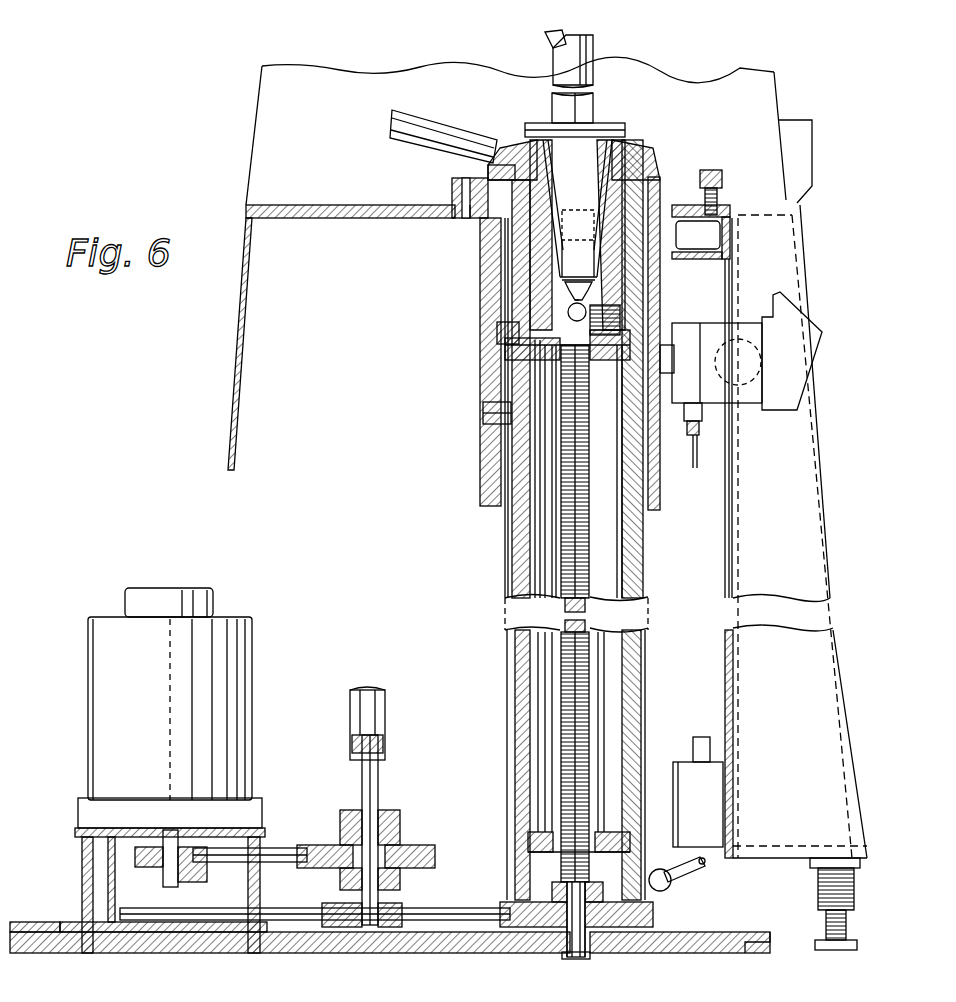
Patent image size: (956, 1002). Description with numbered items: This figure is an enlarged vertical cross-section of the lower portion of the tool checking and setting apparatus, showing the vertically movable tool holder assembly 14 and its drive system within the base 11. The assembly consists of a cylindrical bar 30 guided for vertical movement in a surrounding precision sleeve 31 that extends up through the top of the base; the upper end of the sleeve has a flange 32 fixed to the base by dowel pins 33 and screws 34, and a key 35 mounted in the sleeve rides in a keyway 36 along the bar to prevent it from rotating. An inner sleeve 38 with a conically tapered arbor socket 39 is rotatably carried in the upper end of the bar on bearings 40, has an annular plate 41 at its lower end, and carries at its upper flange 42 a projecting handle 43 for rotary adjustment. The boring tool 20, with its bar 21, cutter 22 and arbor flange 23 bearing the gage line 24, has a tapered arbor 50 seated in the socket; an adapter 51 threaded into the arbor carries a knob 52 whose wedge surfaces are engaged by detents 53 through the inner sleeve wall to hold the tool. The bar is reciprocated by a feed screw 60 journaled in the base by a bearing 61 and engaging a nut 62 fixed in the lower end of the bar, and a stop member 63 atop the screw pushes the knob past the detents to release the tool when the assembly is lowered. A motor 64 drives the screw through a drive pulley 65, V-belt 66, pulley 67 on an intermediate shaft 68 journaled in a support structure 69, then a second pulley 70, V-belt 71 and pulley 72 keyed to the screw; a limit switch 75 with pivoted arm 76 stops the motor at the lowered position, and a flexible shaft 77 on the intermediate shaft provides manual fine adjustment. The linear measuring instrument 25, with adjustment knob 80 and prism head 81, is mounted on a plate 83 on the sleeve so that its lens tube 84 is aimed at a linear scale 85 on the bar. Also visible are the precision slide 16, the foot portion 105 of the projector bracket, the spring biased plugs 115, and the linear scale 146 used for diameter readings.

The base 11 is at (244, 348).
The tool holder assembly 14 is at (503, 93).
The precision slide 16 is at (658, 1001).
The boring tool 20 is at (600, 62).
The bar 21 is at (555, 66).
The cutter 22 is at (545, 36).
The arbor flange 23 is at (602, 120).
The gage line 24 is at (622, 132).
The linear measuring instrument 25 is at (750, 418).
The cylindrical bar 30 is at (508, 578).
The precision sleeve 31 is at (480, 468).
The flange 32 is at (450, 190).
The dowel pins 33 is at (468, 218).
The screws 34 is at (696, 172).
The key 35 is at (482, 412).
The keyway 36 is at (512, 542).
The inner sleeve 38 is at (530, 272).
The arbor socket 39 is at (548, 130).
The bearings 40 is at (487, 172).
The annular plate 41 is at (602, 366).
The flange 42 is at (655, 165).
The handle 43 is at (430, 122).
The tapered arbor 50 is at (577, 208).
The adapter 51 is at (600, 288).
The knob 52 is at (566, 318).
The detents 53 is at (624, 310).
The feed screw 60 is at (562, 606).
The bearing 61 is at (600, 950).
The nut 62 is at (516, 806).
The stop member 63 is at (505, 358).
The motor 64 is at (240, 620).
The drive pulley 65 is at (180, 885).
The V-belt 66 is at (244, 864).
The pulley 67 is at (320, 845).
The intermediate shaft 68 is at (380, 786).
The support structure 69 is at (398, 816).
The second pulley 70 is at (326, 904).
The V-belt 71 is at (464, 908).
The pulley 72 is at (538, 930).
The limit switch 75 is at (690, 765).
The pivoted arm 76 is at (672, 882).
The flexible shaft 77 is at (386, 732).
The adjustment knob 80 is at (740, 352).
The prism head 81 is at (812, 368).
The plate 83 is at (676, 394).
The lens tube 84 is at (668, 358).
The linear scale 85 is at (646, 568).
The foot portion 105 is at (740, 1001).
The spring biased plugs 115 is at (568, 1001).
The linear scale 146 is at (578, 1001).